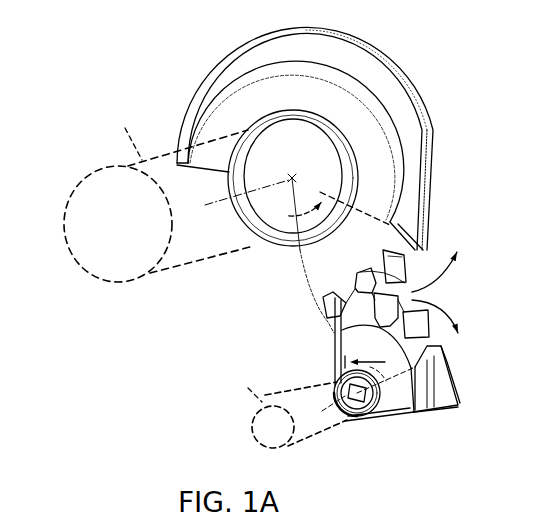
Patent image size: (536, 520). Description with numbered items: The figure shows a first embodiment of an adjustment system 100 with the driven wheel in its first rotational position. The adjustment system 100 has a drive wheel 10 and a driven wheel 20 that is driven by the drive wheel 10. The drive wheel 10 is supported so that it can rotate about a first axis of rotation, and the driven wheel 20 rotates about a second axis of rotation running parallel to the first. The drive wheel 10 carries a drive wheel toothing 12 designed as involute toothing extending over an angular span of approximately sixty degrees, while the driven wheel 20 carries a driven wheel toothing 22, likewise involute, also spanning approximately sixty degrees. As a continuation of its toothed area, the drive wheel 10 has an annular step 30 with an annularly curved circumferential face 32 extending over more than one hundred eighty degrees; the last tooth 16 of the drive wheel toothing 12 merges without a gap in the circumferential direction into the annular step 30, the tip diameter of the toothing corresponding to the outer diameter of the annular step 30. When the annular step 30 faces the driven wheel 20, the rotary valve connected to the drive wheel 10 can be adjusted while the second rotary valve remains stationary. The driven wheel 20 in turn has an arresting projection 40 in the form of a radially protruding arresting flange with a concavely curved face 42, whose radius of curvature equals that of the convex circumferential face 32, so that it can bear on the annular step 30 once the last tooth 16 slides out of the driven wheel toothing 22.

The adjustment system 100 is at (432, 62).
The drive wheel 10 is at (333, 263).
The drive wheel toothing 12 is at (340, 296).
The last tooth 16 is at (402, 240).
The driven wheel 20 is at (403, 405).
The driven wheel toothing 22 is at (358, 326).
The annular step 30 is at (436, 210).
The circumferential face 32 is at (447, 153).
The arresting projection 40 is at (459, 368).
The concavely curved face 42 is at (458, 382).